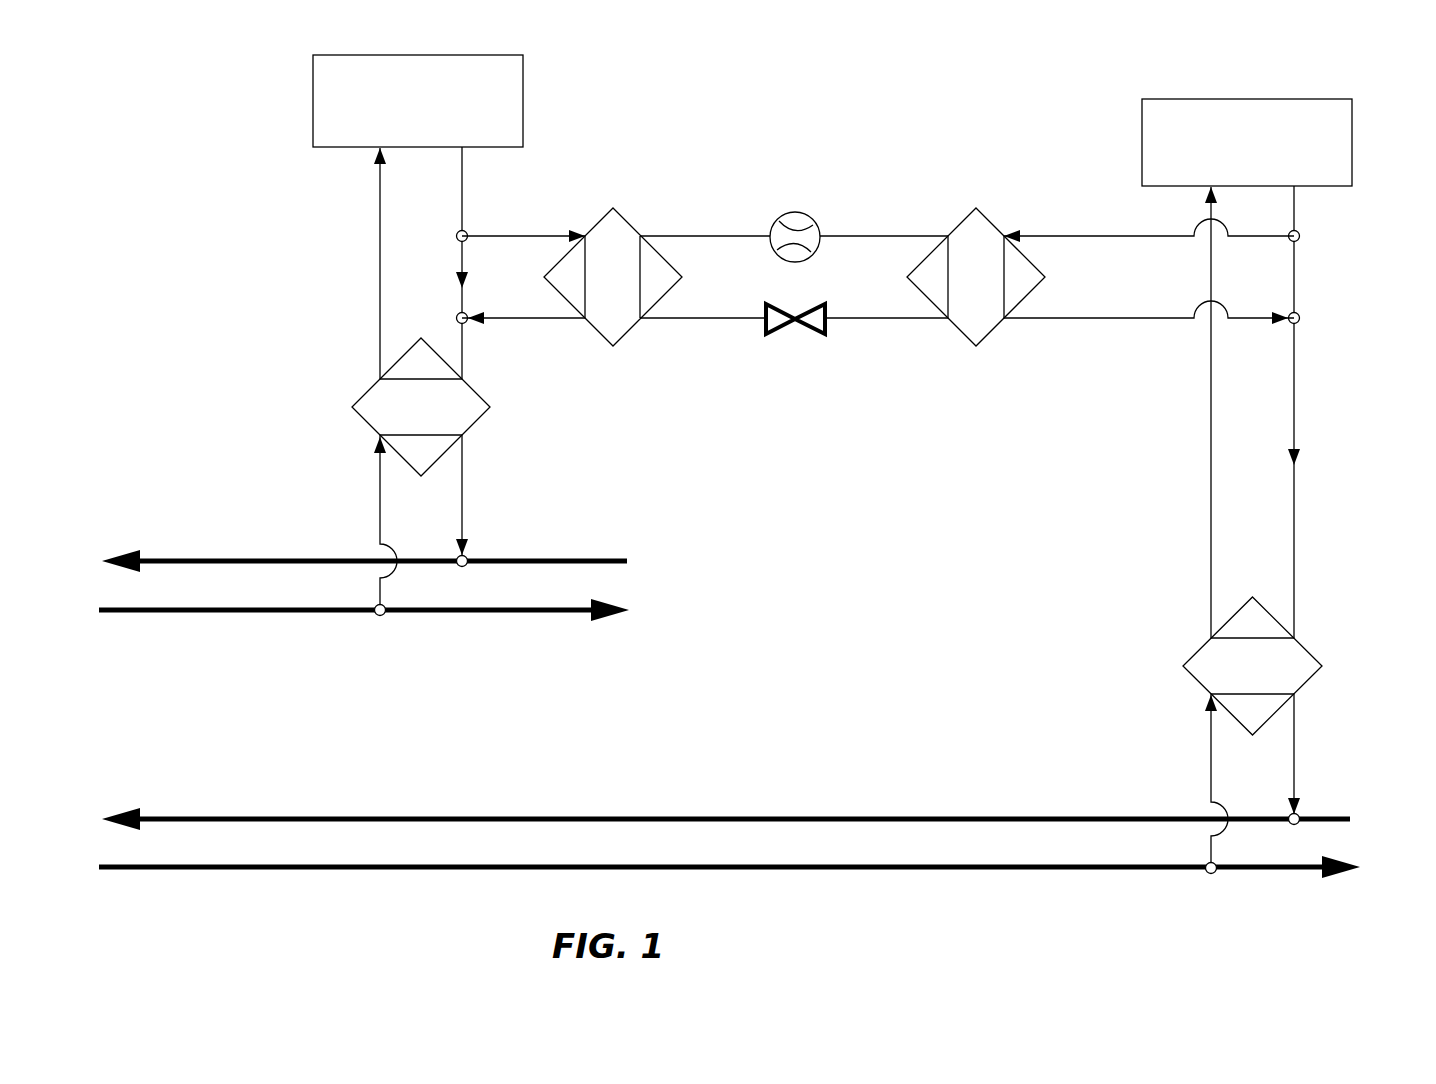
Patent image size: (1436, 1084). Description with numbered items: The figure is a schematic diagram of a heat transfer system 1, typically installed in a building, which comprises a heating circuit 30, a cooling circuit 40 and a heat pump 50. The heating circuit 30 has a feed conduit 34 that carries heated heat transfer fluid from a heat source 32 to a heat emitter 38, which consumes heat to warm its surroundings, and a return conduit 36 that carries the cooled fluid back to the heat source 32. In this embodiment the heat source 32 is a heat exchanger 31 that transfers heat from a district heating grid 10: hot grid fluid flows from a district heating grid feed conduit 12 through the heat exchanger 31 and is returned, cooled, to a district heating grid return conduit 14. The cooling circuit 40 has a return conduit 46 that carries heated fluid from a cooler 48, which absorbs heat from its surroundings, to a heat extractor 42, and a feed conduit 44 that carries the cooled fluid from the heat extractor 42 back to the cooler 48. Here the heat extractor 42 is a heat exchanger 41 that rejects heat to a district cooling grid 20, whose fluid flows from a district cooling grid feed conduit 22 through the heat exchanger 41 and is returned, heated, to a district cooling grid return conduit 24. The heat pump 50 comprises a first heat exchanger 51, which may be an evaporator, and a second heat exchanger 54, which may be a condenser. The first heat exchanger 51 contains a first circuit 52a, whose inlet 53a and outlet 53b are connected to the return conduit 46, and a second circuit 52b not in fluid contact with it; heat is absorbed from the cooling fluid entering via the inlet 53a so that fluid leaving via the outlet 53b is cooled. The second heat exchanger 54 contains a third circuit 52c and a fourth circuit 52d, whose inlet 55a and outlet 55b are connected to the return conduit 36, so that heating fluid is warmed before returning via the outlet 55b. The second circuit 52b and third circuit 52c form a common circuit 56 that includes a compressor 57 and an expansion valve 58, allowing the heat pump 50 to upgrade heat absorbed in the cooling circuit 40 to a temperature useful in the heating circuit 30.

The heat transfer system 1 is at (215, 138).
The district heating grid 10 is at (647, 810).
The district heating grid feed conduit 12 is at (787, 870).
The district heating grid return conduit 14 is at (818, 817).
The district cooling grid 20 is at (240, 539).
The district cooling grid feed conduit 22 is at (286, 614).
The district cooling grid return conduit 24 is at (319, 560).
The heating circuit 30 is at (1342, 217).
The heat exchanger 31 is at (1293, 652).
The heat source 32 is at (1210, 665).
The feed conduit 34 is at (1211, 537).
The return conduit 36 is at (1295, 400).
The heat emitter 38 is at (1315, 112).
The cooling circuit 40 is at (322, 190).
The heat exchanger 41 is at (465, 407).
The heat extractor 42 is at (377, 400).
The feed conduit 44 is at (378, 290).
The return conduit 46 is at (460, 200).
The cooler 48 is at (323, 122).
The heat pump 50 is at (748, 165).
The first heat exchanger 51 is at (623, 242).
The first circuit 52a is at (548, 232).
The second circuit 52b is at (707, 320).
The third circuit 52c is at (895, 320).
The fourth circuit 52d is at (1045, 233).
The inlet 53a is at (547, 233).
The outlet 53b is at (548, 322).
The second heat exchanger 54 is at (988, 233).
The inlet 55a is at (1107, 233).
The outlet 55b is at (1097, 320).
The common circuit 56 is at (877, 235).
The compressor 57 is at (808, 220).
The expansion valve 58 is at (818, 333).